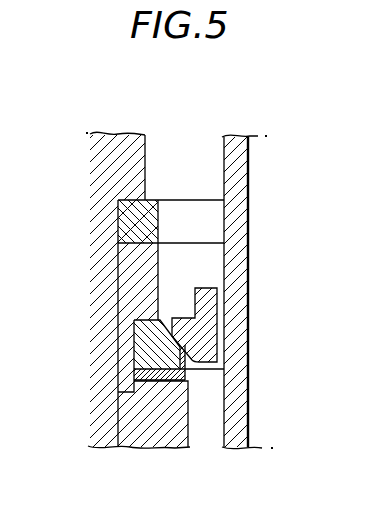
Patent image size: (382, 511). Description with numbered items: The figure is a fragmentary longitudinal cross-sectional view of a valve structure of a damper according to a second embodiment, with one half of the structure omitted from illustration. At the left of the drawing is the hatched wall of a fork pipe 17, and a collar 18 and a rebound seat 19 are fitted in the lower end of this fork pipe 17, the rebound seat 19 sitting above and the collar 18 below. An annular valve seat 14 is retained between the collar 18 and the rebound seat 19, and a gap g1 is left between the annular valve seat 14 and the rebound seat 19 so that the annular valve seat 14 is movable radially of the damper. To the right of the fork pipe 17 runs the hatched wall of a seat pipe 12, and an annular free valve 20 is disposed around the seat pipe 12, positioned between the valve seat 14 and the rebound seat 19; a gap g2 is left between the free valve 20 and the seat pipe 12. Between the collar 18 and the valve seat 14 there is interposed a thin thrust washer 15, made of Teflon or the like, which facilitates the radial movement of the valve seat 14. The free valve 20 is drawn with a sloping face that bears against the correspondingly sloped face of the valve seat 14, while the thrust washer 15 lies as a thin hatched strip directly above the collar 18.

The seat pipe 12 is at (240, 212).
The annular valve seat 14 is at (148, 357).
The thrust washer 15 is at (148, 378).
The fork pipe 17 is at (108, 252).
The collar 18 is at (152, 428).
The rebound seat 19 is at (121, 212).
The annular free valve 20 is at (209, 298).
The gap g1 is at (137, 338).
The gap g2 is at (220, 336).